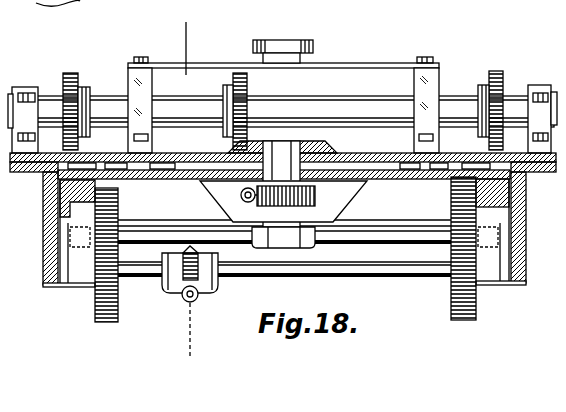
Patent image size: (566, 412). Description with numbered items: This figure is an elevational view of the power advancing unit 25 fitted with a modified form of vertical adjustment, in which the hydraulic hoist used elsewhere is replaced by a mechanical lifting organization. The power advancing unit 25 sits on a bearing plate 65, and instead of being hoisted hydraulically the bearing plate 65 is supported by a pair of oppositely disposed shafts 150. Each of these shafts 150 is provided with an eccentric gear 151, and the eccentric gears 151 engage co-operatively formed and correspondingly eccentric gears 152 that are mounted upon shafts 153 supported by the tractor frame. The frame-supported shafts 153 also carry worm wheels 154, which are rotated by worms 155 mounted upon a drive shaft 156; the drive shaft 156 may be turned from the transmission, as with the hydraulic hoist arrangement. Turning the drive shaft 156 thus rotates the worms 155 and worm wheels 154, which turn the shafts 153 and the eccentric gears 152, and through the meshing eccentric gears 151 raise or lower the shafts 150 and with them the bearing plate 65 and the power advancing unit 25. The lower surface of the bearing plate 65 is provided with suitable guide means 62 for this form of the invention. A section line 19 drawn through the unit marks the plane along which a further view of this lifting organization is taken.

The section line 19 is at (170, 26).
The power advancing unit 25 is at (378, 52).
The eccentric gears 151 is at (113, 198).
The bearing plate 65 is at (177, 180).
The shafts 150 is at (390, 220).
The shafts 153 is at (386, 279).
The eccentric gears 152 is at (96, 313).
The guide means 62 is at (68, 276).
The worm wheels 154 is at (183, 273).
The worms 155 is at (205, 296).
The drive shaft 156 is at (186, 304).